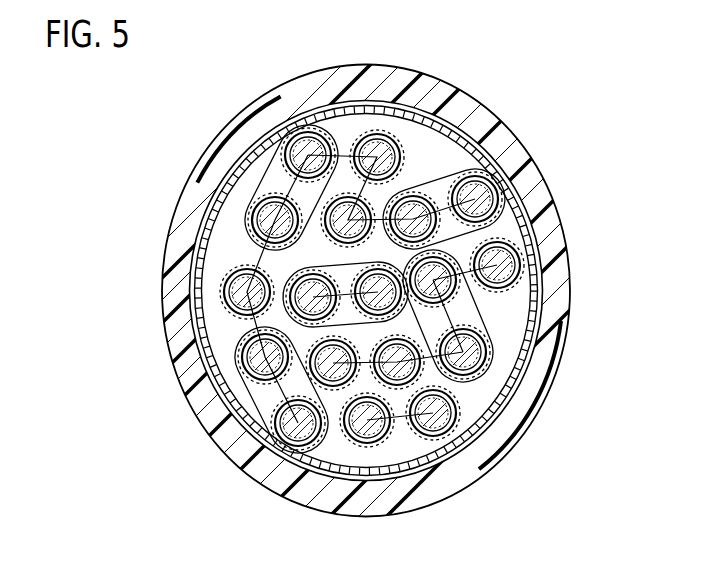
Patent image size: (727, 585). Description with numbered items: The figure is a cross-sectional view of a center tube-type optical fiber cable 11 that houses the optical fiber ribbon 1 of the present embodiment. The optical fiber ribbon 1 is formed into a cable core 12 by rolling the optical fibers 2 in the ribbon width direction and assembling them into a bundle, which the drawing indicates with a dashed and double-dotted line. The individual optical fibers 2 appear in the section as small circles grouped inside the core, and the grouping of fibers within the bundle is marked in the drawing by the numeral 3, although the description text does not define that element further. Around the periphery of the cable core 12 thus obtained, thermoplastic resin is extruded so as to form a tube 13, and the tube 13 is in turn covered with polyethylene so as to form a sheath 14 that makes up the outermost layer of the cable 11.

The optical fiber ribbon 1 is at (457, 160).
The optical fibers 2 is at (310, 150).
The twisted pair 3 is at (440, 178).
The center tube-type optical fiber cable 11 is at (525, 128).
The cable core 12 is at (512, 362).
The tube 13 is at (500, 405).
The sheath 14 is at (497, 447).